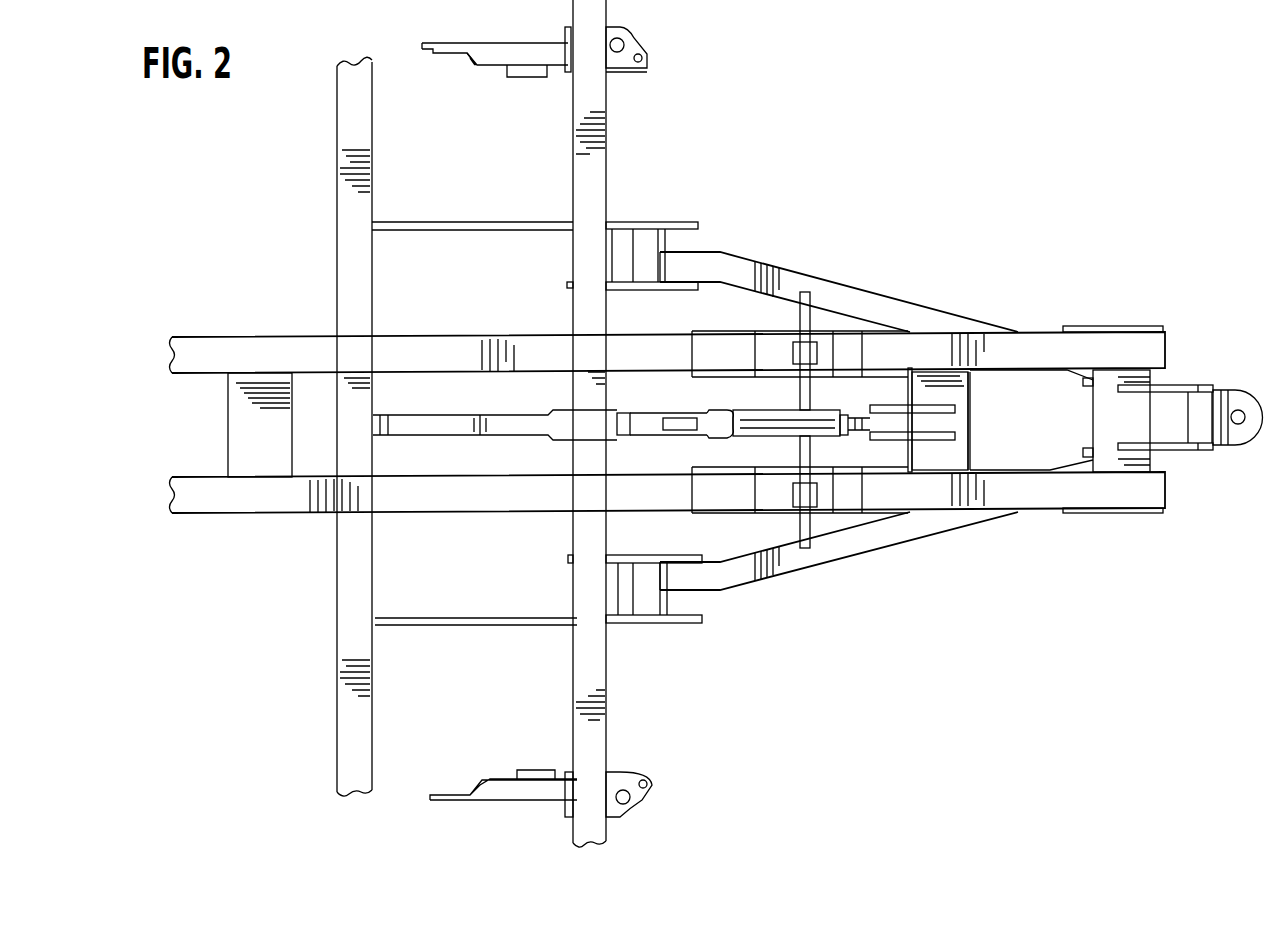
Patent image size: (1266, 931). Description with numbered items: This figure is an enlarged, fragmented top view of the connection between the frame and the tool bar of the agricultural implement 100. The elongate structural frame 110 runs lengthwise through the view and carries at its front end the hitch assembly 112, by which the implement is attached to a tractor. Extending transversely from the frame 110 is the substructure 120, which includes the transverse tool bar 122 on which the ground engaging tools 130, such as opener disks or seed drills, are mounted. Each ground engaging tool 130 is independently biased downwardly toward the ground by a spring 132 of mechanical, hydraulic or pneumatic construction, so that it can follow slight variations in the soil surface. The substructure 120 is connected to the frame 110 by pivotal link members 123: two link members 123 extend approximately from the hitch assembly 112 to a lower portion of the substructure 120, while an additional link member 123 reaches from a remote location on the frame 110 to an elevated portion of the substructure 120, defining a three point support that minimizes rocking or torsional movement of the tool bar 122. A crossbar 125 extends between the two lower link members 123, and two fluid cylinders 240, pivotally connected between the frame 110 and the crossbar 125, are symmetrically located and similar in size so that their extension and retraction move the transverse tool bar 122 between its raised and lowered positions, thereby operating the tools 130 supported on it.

The agricultural implement 100 is at (769, 180).
The frame 110 is at (248, 502).
The hitch assembly 112 is at (1234, 382).
The substructure 120 is at (705, 683).
The transverse tool bar 122 is at (600, 157).
The link member 123 is at (744, 257).
The crossbar 125 is at (812, 317).
The ground engaging tool 130 is at (447, 43).
The spring 132 is at (626, 40).
The fluid cylinder 240 is at (780, 340).